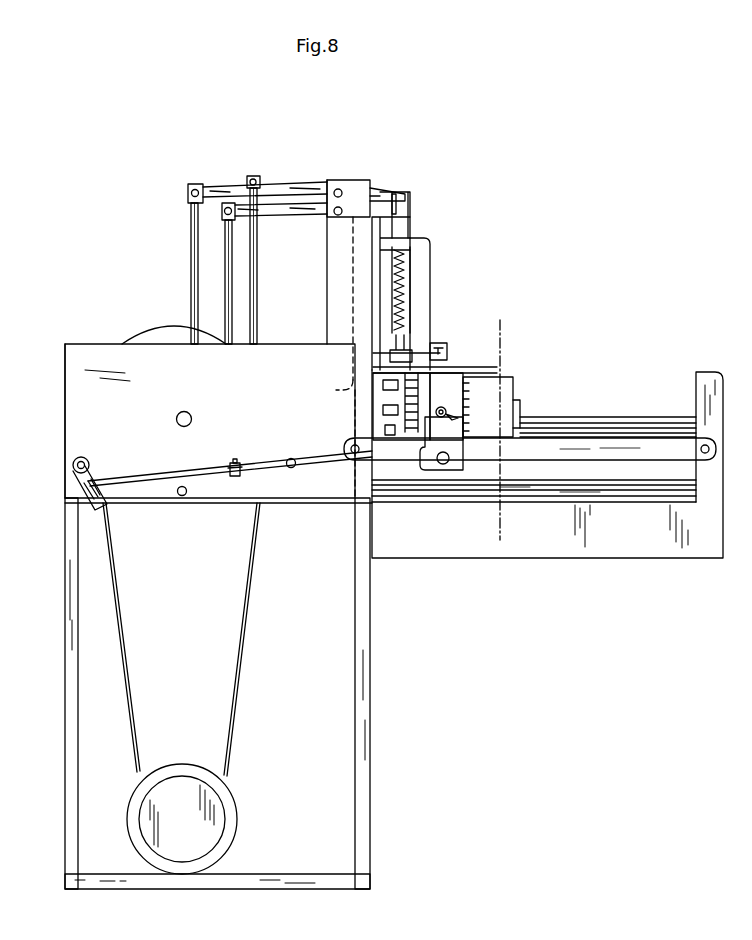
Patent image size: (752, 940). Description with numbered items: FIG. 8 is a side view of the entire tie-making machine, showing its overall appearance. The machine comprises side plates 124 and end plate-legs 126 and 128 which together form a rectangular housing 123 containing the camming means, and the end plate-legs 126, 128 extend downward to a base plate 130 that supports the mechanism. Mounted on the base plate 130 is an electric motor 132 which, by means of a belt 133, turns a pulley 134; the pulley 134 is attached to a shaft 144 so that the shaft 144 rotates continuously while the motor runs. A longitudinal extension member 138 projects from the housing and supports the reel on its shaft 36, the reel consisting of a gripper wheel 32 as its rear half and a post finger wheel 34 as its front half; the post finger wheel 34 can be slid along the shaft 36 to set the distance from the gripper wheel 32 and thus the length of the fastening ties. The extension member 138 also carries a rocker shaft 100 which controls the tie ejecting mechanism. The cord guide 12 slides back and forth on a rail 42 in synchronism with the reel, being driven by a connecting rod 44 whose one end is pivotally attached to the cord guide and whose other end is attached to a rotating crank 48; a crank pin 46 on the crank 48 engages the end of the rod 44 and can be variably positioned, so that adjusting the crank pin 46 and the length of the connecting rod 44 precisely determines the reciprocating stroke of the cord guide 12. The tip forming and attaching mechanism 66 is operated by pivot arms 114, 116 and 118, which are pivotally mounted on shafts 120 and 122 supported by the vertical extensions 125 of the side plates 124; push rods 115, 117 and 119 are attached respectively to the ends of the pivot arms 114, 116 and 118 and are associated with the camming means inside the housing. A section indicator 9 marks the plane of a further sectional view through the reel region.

The section line 9- 9 is at (512, 334).
The cord guide 12 is at (458, 477).
The gripper wheel 32 is at (418, 406).
The post finger wheel 34 is at (497, 418).
The shaft 36 is at (598, 418).
The rail 42 is at (562, 458).
The connecting rod 44 is at (286, 468).
The crank pin 46 is at (92, 508).
The crank 48 is at (92, 469).
The tip forming and attaching mechanism 66 is at (439, 327).
The rocker shaft 100 is at (622, 492).
The pivot arm 114 is at (216, 187).
The push rod 115 is at (192, 226).
The pivot arm 116 is at (302, 210).
The push rod 117 is at (228, 278).
The pivot arm 118 is at (273, 182).
The push rod 119 is at (250, 295).
The shaft 120 is at (342, 190).
The shaft 122 is at (342, 212).
The housing 123 is at (56, 399).
The side plate 124 is at (314, 409).
The column 125 is at (328, 319).
The end plate-leg 126 is at (72, 785).
The end plate-leg 128 is at (362, 772).
The base plate 130 is at (340, 880).
The electric motor 132 is at (196, 816).
The belt 133 is at (246, 606).
The pulley 134 is at (166, 342).
The longitudinal extension member 138 is at (636, 532).
The shaft 144 is at (189, 417).